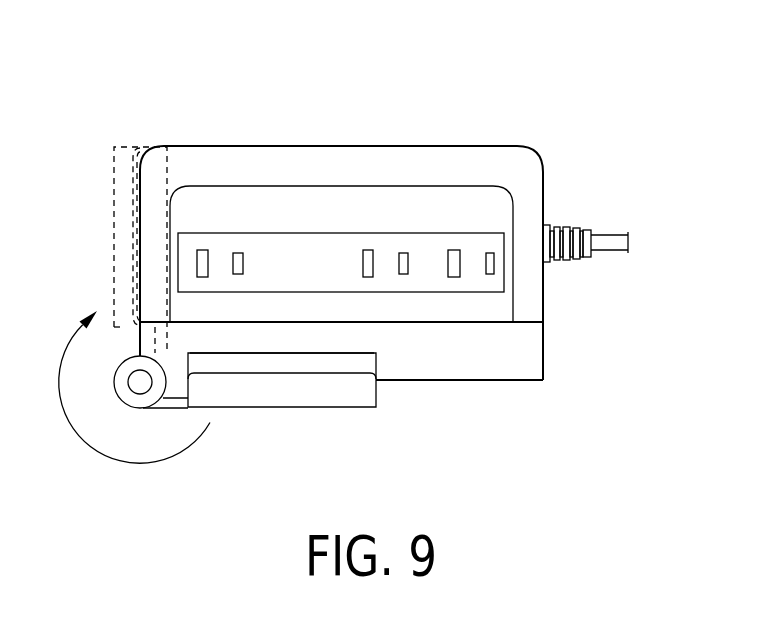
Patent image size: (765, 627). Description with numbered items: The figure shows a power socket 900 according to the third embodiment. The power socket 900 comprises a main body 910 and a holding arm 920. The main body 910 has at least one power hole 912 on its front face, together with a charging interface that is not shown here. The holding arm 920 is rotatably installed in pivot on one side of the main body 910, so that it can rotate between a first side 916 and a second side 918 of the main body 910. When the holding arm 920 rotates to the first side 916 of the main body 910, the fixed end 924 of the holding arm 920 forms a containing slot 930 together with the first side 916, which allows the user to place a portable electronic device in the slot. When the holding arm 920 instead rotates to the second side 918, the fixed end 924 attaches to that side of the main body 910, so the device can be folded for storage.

The power socket 900 is at (497, 128).
The main body 910 is at (368, 165).
The power hole 912 is at (490, 263).
The first side 916 is at (417, 370).
The second side 918 is at (136, 192).
The holding arm 920 is at (182, 175).
The fixed end 924 is at (324, 385).
The containing slot 930 is at (343, 363).